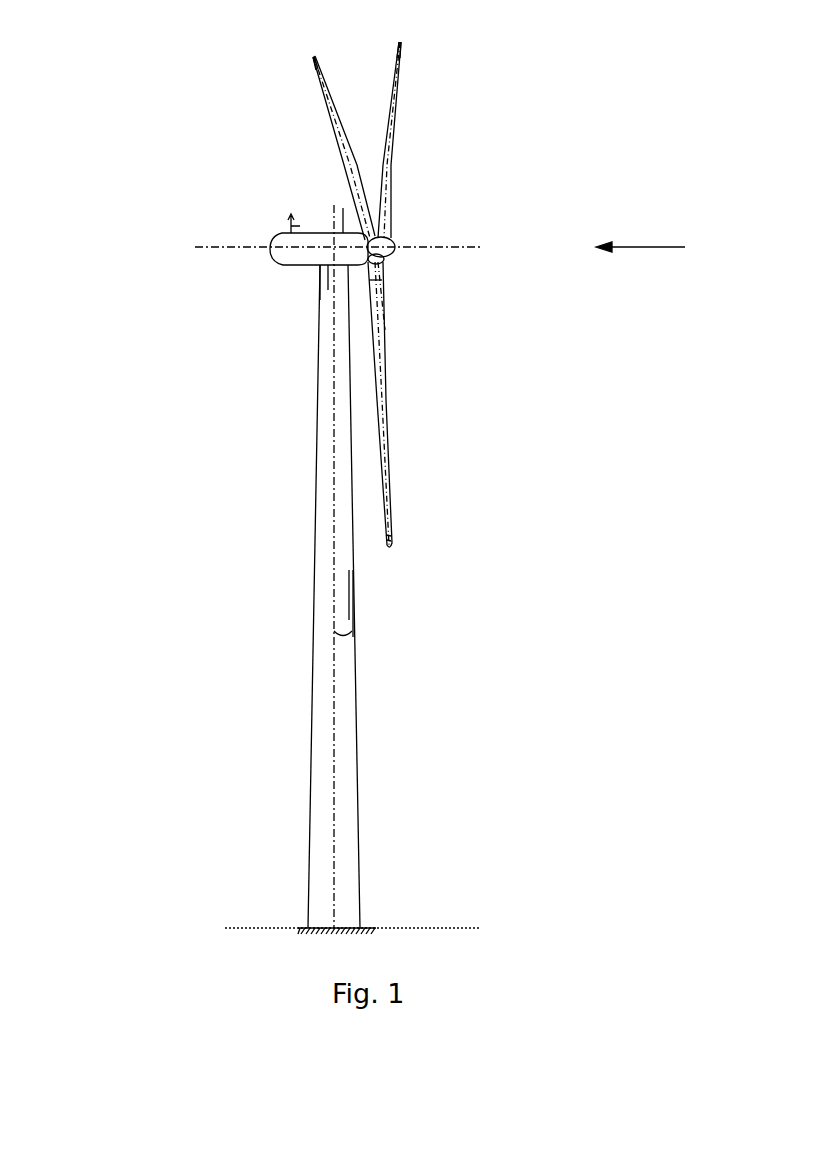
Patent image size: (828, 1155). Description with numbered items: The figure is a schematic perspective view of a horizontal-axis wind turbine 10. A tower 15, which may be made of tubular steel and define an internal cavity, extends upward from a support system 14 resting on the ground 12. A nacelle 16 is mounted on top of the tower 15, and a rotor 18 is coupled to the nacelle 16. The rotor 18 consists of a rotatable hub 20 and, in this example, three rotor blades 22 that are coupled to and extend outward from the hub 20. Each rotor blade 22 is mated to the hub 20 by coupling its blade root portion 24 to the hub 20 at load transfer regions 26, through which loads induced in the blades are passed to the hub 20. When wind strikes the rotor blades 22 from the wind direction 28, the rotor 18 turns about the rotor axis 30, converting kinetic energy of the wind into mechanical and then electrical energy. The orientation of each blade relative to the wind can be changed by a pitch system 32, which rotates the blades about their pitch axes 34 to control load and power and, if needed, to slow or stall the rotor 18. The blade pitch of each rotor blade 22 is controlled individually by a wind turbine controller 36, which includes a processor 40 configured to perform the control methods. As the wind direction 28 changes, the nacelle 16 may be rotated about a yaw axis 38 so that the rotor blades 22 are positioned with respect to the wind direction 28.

The wind turbine 10 is at (122, 58).
The ground 12 is at (245, 927).
The support system 14 is at (303, 927).
The tower 15 is at (318, 572).
The nacelle 16 is at (288, 264).
The rotor 18 is at (404, 164).
The rotatable hub 20 is at (396, 244).
The rotor blade 22 is at (331, 112).
The blade root portion 24 is at (388, 338).
The load transfer regions 26 is at (384, 263).
The wind direction 28 is at (654, 247).
The rotor axis 30 is at (482, 249).
The pitch system 32 is at (397, 296).
The pitch axes 34 is at (310, 58).
The wind turbine controller 36 is at (318, 293).
The yaw axis 38 is at (356, 637).
The processor 40 is at (348, 232).